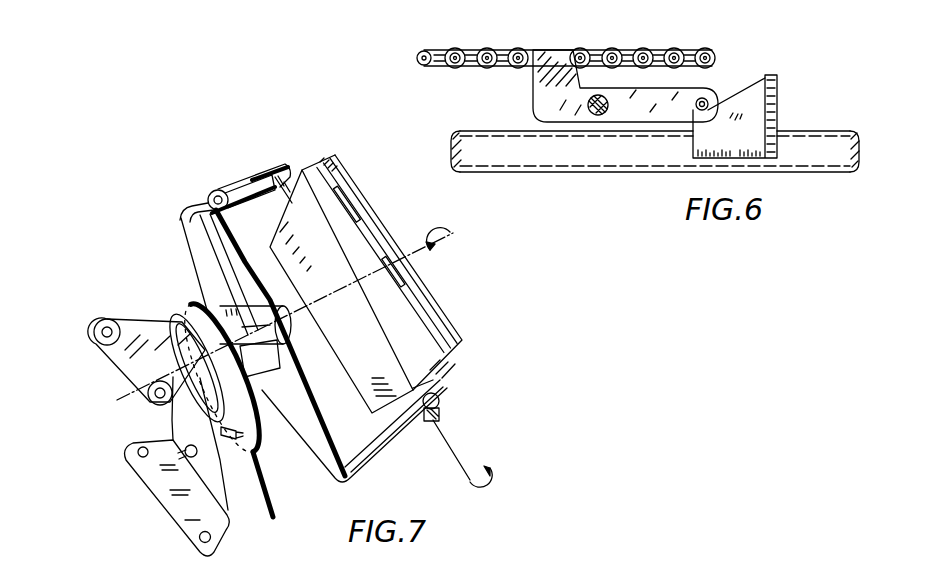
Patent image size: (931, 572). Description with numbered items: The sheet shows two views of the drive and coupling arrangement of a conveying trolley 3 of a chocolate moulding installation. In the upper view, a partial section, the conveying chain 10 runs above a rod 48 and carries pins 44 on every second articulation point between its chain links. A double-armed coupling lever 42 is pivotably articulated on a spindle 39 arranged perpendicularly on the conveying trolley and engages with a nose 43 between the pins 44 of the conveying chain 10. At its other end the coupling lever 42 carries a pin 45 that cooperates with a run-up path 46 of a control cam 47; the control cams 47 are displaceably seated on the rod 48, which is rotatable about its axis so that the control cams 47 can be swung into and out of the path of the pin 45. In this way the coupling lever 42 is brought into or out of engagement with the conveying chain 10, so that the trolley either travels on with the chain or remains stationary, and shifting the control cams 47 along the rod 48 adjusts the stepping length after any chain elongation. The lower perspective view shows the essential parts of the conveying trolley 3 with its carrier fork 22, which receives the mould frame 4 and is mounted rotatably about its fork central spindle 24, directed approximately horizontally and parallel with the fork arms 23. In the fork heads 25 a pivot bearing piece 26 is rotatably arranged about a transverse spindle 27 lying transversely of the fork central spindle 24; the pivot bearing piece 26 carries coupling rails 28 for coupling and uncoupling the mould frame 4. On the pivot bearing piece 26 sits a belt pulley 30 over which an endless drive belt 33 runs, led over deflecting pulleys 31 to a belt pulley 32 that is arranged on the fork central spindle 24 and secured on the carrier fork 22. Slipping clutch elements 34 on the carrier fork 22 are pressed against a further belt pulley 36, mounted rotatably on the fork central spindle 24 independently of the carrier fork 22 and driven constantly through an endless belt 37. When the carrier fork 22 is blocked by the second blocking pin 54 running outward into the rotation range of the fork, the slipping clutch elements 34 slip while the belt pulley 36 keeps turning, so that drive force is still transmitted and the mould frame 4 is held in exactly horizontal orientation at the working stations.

In FIG. 6, the conveying chain 10 is at (470, 50).
In FIG. 6, the pins 44 is at (519, 48).
In FIG. 6, the nose 43 is at (560, 62).
In FIG. 6, the coupling lever 42 is at (649, 95).
In FIG. 6, the spindle 39 is at (555, 111).
In FIG. 6, the pin 45 is at (707, 100).
In FIG. 6, the run-up path 46 is at (742, 90).
In FIG. 6, the control cam 47 is at (775, 110).
In FIG. 6, the rod 48 is at (632, 152).
In FIG. 7, the mould frame 4 is at (308, 188).
In FIG. 7, the transverse spindle 27 is at (323, 230).
In FIG. 7, the fork central spindle 24 is at (362, 277).
In FIG. 7, the carrier fork 22 is at (198, 242).
In FIG. 7, the fork arms 23 is at (238, 182).
In FIG. 7, the endless drive belt 33 is at (252, 178).
In FIG. 7, the deflecting pulleys 31 is at (208, 196).
In FIG. 7, the belt pulley 30 is at (281, 165).
In FIG. 7, the belt pulley 36 is at (183, 312).
In FIG. 7, the belt pulley 32 is at (289, 338).
In FIG. 7, the slipping clutch elements 34 is at (258, 378).
In FIG. 7, the conveying trolley 3 is at (143, 488).
In FIG. 7, the second blocking pin 54 is at (245, 433).
In FIG. 7, the endless belt 37 is at (280, 503).
In FIG. 7, the coupling rails 28 is at (437, 386).
In FIG. 7, the pivot bearing piece 26 is at (440, 400).
In FIG. 7, the fork heads 25 is at (440, 419).